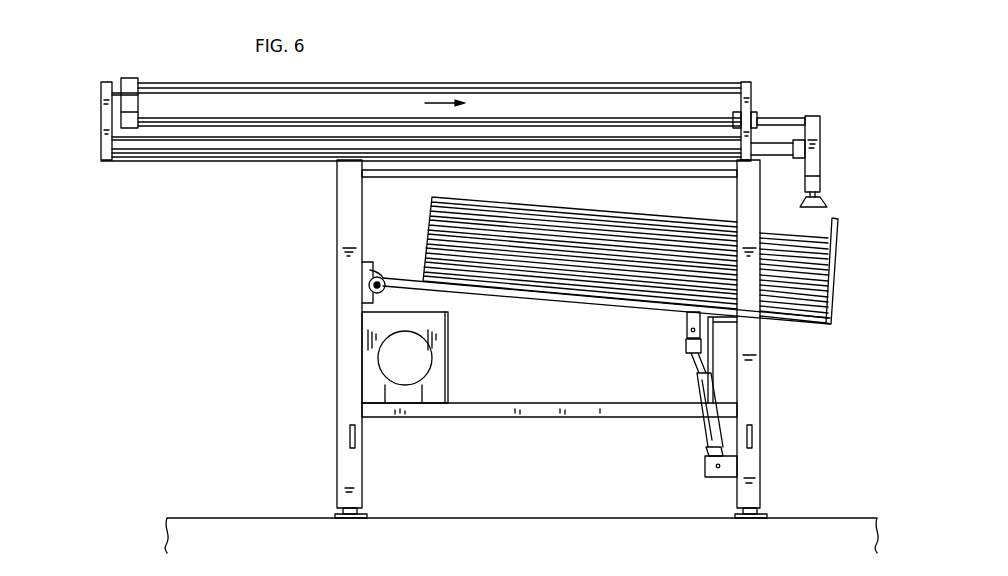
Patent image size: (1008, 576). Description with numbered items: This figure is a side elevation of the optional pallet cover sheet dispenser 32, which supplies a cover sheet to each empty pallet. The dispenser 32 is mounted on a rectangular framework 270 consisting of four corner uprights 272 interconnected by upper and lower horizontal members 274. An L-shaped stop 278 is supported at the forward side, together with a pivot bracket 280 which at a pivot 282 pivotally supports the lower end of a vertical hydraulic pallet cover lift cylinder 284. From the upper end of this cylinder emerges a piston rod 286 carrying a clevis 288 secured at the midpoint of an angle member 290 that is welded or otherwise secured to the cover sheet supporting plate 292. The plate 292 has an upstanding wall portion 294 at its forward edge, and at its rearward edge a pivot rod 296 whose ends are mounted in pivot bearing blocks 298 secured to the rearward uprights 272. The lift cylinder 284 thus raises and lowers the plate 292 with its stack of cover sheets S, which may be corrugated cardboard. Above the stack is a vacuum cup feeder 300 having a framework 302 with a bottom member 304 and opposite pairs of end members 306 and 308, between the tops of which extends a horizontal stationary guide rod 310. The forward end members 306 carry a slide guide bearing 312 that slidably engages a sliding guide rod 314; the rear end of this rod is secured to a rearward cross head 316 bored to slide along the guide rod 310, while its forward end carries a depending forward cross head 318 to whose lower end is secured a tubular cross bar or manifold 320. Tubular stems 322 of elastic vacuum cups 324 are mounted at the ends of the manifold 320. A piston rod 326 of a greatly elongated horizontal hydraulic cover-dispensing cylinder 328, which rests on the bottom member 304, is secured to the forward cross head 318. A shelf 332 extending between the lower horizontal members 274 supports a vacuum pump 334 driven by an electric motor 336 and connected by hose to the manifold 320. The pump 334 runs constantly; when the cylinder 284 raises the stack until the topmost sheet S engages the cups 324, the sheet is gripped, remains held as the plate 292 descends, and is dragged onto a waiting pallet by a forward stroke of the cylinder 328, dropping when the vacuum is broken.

The pallet cover sheet dispenser 32 is at (103, 75).
The rectangular framework 270 is at (332, 226).
The corner upright 272 is at (343, 400).
The horizontal member 274 is at (588, 177).
The L-shaped stop 278 is at (737, 346).
The pivot bracket 280 is at (726, 474).
The pivot 282 is at (712, 466).
The hydraulic pallet cover lift cylinder 284 is at (695, 380).
The piston rod 286 is at (686, 343).
The clevis 288 is at (687, 330).
The angle member 290 is at (687, 316).
The cover sheet supporting plate 292 is at (521, 296).
The upstanding wall portion 294 is at (836, 272).
The pivot rod 296 is at (380, 277).
The pivot bearing block 298 is at (370, 262).
The vacuum cup feeder 300 is at (496, 80).
The framework 302 is at (105, 167).
The bottom member 304 is at (213, 161).
The forward end member 306 is at (752, 98).
The rearward end member 308 is at (101, 128).
The stationary guide rod 310 is at (366, 83).
The slide guide bearing 312 is at (733, 116).
The sliding guide rod 314 is at (795, 117).
The rearward cross head 316 is at (138, 102).
The forward cross head 318 is at (820, 148).
The tubular cross bar or manifold 320 is at (820, 180).
The tubular stem 322 is at (800, 203).
The vacuum cup 324 is at (827, 204).
The piston rod 326 is at (780, 156).
The horizontal hydraulic cover-dispensing cylinder 328 is at (273, 148).
The shelf 332 is at (452, 404).
The vacuum pump 334 is at (402, 322).
The electric motor 336 is at (418, 369).
The cover sheet S is at (665, 220).